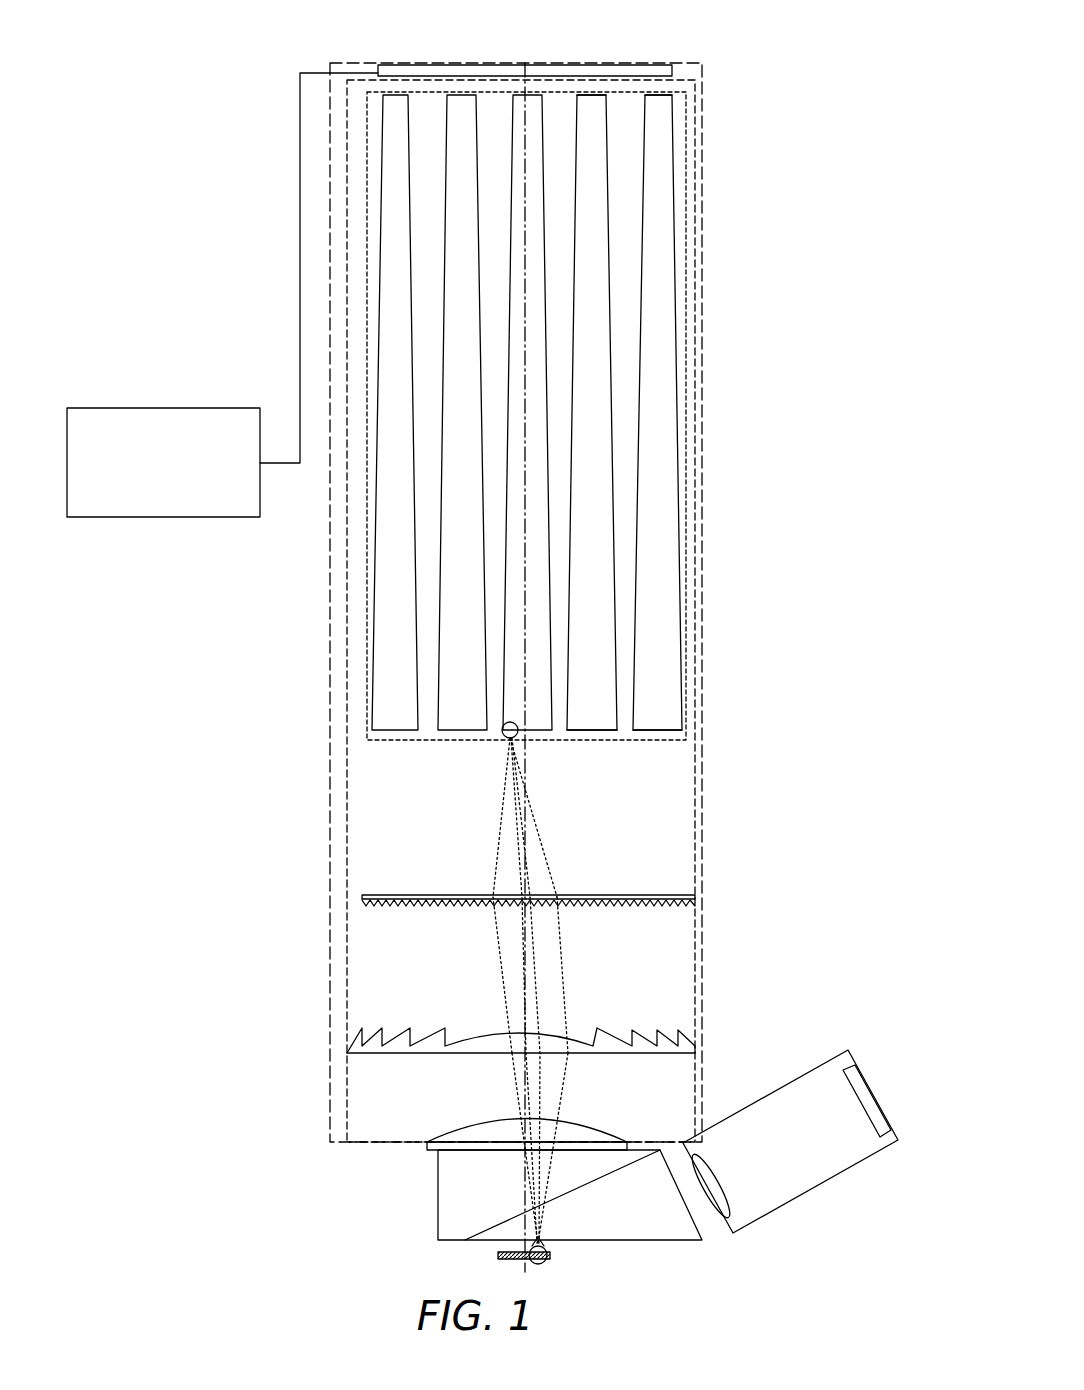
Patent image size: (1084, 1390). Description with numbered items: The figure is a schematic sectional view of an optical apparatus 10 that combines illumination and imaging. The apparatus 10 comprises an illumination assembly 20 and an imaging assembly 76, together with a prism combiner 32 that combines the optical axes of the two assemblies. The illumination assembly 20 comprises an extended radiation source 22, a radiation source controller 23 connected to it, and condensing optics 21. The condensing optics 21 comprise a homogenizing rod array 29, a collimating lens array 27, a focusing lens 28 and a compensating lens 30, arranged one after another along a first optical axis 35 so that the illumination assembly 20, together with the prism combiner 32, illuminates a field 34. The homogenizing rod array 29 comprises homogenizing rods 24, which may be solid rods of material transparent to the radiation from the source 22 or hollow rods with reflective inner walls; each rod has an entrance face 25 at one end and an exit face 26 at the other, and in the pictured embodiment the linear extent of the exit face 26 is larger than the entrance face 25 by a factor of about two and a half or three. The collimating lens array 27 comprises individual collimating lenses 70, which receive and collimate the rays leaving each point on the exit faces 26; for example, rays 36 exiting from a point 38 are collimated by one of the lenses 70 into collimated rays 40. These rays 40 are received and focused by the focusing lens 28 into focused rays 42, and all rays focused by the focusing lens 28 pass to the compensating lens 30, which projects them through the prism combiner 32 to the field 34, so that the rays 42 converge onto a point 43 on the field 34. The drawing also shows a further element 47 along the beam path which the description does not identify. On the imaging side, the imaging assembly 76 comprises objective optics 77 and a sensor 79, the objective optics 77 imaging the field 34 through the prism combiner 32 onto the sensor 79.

The optical apparatus 10 is at (232, 92).
The illumination assembly 20 is at (703, 328).
The condensing optics 21 is at (700, 842).
The extended radiation source 22 is at (672, 70).
The radiation source controller 23 is at (162, 408).
The homogenizing rods 24 is at (588, 237).
The entrance face 25 is at (600, 96).
The exit face 26 is at (590, 730).
The collimating lens array 27 is at (697, 905).
The focusing lens 28 is at (700, 1042).
The homogenizing rod array 29 is at (404, 741).
The compensating lens 30 is at (473, 1132).
The prism combiner 32 is at (513, 1075).
The field 34 is at (497, 1256).
The first optical axis 35 is at (525, 465).
The rays 36 is at (520, 833).
The point 38 is at (503, 725).
The collimated rays 40 is at (500, 960).
The focused rays 42 is at (543, 1087).
The point on field 43 is at (548, 1260).
The central ray 47 is at (525, 923).
The collimating lenses 70 is at (460, 897).
The imaging assembly 76 is at (855, 1165).
The objective optics 77 is at (712, 1187).
The sensor 79 is at (868, 1102).